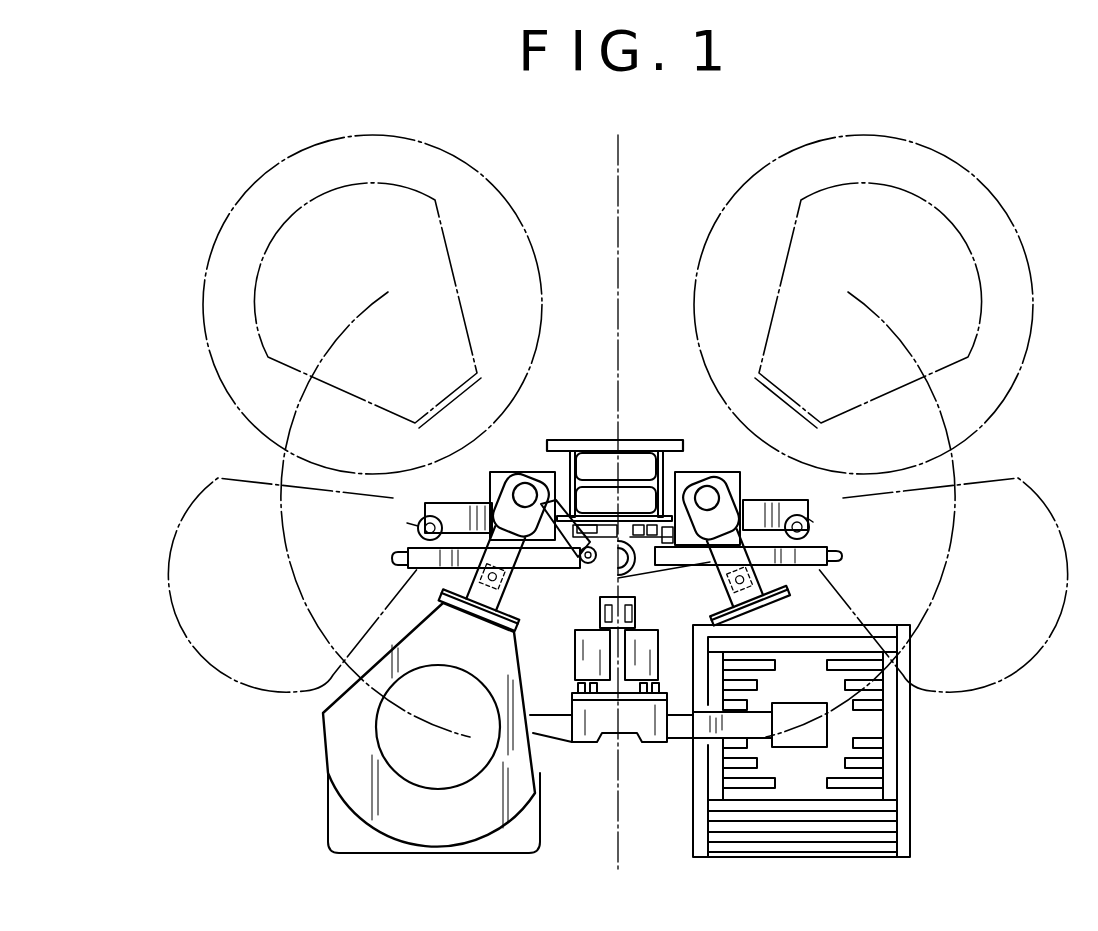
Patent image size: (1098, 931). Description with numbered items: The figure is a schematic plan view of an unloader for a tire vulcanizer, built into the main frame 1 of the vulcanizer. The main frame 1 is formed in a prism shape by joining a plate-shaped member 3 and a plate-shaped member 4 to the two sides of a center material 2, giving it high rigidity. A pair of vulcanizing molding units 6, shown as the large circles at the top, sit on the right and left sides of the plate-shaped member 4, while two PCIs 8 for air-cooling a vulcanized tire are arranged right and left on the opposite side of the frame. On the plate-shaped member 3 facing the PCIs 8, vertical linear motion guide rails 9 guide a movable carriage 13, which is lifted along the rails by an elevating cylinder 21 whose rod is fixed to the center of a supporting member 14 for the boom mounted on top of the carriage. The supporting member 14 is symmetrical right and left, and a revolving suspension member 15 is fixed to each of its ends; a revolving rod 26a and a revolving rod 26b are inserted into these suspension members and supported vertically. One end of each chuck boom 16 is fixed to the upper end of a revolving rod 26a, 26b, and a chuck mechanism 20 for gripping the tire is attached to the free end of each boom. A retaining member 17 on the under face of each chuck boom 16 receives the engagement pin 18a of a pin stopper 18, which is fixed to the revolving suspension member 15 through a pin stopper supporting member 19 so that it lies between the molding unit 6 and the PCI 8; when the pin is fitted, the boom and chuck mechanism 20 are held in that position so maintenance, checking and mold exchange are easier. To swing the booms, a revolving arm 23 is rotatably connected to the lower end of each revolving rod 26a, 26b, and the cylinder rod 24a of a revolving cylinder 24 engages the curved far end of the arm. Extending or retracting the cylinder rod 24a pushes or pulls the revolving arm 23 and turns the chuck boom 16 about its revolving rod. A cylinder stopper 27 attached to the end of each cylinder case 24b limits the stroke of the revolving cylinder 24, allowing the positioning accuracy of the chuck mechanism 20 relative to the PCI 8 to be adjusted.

The main frame 1 is at (637, 425).
The center material 2 is at (573, 470).
The plate-shaped member 3 is at (632, 515).
The plate-shaped member 4 is at (594, 440).
The vulcanizing molding unit 6 is at (498, 188).
The PCI 8 is at (312, 803).
The linear motion guide rail 9 is at (630, 548).
The movable carriage 13 is at (650, 540).
The supporting member for a boom 14 is at (683, 557).
The revolving suspension member 15 is at (500, 489).
The chuck boom 16 is at (476, 558).
The retaining member 17 is at (507, 600).
The pin stopper 18 is at (405, 527).
The engagement pin 18a is at (407, 523).
The pin stopper supporting member 19 is at (427, 503).
The chuck mechanism 20 is at (280, 233).
The elevating cylinder 21 is at (627, 568).
The revolving arm 23 is at (570, 557).
The revolving cylinder 24 is at (416, 592).
The cylinder rod 24a is at (610, 558).
The cylinder case 24b is at (418, 568).
The revolving rod 26a is at (707, 486).
The revolving rod 26b is at (518, 488).
The cylinder stopper 27 is at (390, 556).